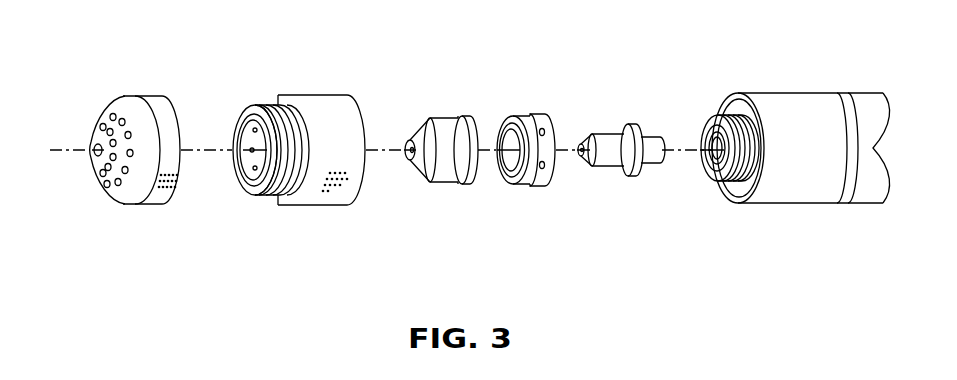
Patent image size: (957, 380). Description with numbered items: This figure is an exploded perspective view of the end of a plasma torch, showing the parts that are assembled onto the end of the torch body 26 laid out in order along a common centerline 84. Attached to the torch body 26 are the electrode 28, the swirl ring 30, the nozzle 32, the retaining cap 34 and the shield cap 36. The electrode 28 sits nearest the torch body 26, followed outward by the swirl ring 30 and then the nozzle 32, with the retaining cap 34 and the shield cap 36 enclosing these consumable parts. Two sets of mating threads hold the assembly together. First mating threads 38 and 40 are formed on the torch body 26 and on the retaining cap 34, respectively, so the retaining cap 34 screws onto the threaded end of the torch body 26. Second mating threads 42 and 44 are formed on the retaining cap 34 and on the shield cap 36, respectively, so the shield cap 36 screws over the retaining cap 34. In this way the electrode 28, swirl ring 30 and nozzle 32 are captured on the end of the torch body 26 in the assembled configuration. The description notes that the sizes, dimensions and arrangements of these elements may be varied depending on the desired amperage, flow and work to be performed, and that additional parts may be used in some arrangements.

The torch body 26 is at (783, 114).
The electrode 28 is at (650, 137).
The swirl ring 30 is at (545, 115).
The nozzle 32 is at (462, 117).
The retaining cap 34 is at (349, 110).
The shield cap 36 is at (160, 116).
The first mating threads 38 is at (738, 180).
The first mating threads 40 is at (342, 198).
The second mating threads 42 is at (278, 196).
The second mating threads 44 is at (179, 181).
The longitudinal axis 84 is at (63, 152).